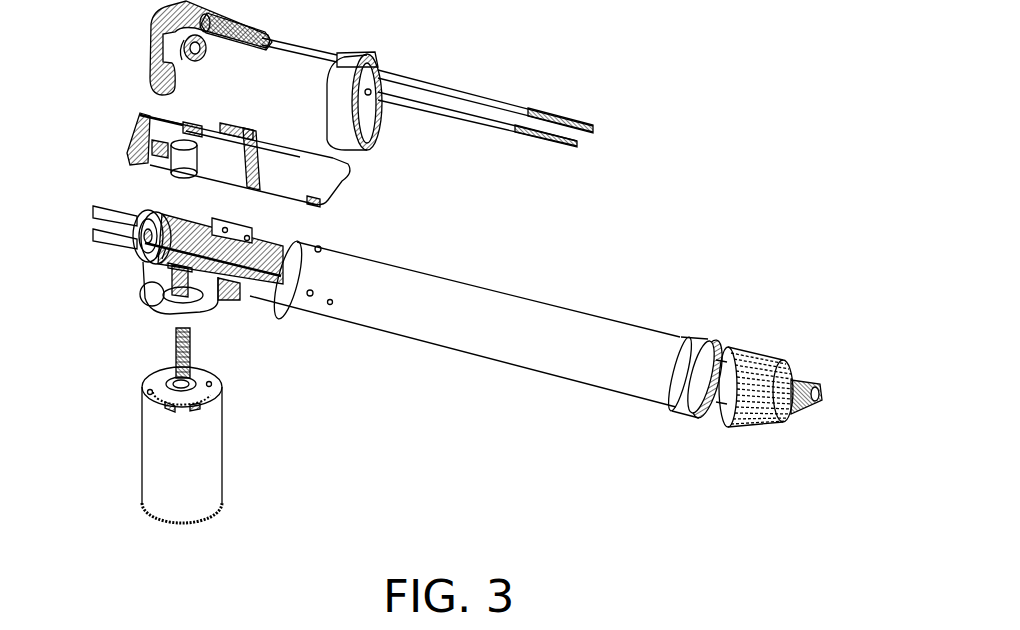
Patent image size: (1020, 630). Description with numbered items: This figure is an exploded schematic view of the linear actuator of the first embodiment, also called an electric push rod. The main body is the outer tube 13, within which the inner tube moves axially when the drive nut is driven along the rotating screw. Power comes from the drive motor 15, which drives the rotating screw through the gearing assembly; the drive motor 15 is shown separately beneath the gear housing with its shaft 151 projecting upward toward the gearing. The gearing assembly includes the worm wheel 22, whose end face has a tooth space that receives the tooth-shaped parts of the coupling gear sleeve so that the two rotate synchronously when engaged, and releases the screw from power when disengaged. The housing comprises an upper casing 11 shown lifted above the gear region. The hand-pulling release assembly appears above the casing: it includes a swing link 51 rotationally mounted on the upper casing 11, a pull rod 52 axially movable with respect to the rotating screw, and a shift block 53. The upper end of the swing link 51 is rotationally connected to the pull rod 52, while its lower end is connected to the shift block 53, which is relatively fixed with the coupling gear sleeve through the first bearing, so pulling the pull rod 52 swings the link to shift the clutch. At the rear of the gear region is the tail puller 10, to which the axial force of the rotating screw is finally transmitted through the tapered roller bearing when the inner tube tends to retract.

The tail puller 10 is at (133, 213).
The upper casing 11 is at (142, 132).
The outer tube 13 is at (407, 298).
The drive motor 15 is at (150, 457).
The motor shaft 151 is at (174, 344).
The worm wheel 22 is at (198, 218).
The swing link 51 is at (150, 31).
The pull rod 52 is at (293, 46).
The shift block 53 is at (182, 80).